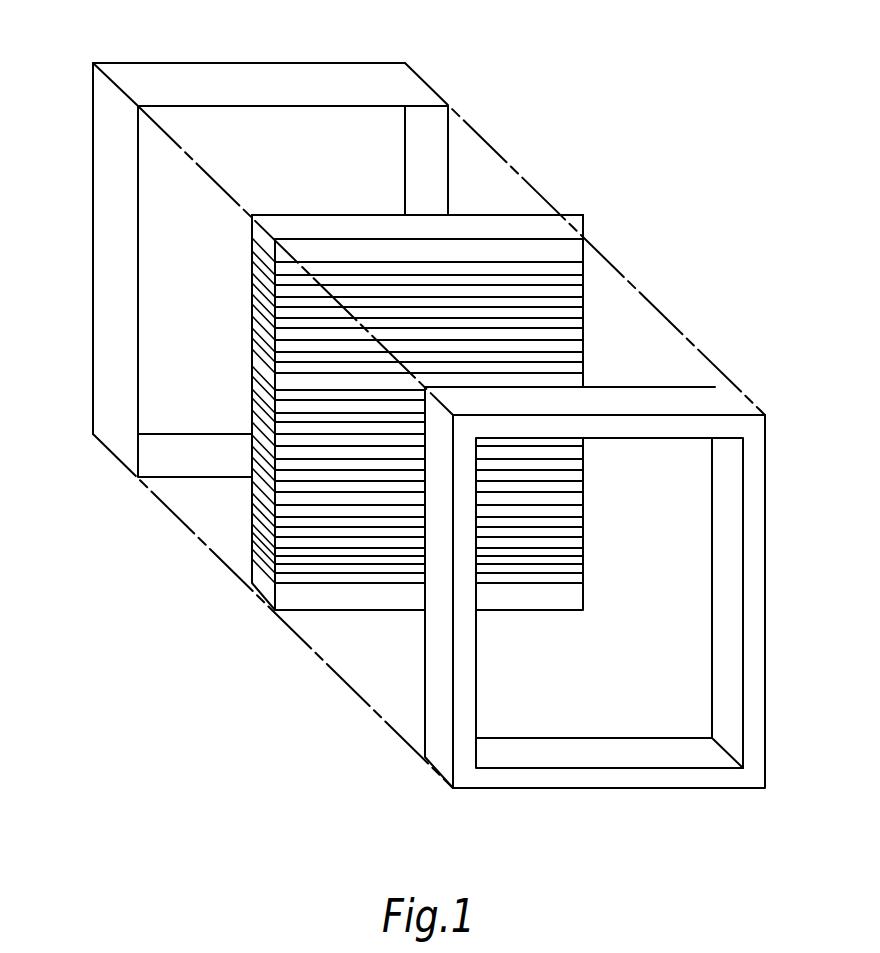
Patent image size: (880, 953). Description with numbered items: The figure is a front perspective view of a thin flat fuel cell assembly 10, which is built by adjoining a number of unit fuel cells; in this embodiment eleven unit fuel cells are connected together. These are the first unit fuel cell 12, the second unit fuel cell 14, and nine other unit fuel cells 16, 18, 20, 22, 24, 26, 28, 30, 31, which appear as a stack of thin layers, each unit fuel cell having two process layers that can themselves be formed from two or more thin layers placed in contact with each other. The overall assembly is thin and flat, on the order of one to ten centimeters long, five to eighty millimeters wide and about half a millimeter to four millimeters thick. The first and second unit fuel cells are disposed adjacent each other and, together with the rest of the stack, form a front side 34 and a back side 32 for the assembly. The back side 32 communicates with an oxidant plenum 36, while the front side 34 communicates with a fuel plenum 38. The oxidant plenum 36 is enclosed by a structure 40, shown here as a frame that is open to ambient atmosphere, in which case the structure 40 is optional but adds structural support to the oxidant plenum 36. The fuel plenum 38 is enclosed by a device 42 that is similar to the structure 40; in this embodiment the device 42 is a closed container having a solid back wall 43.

The fuel cell assembly 10 is at (233, 216).
The first unit fuel cell 12 is at (590, 485).
The second unit fuel cell 14 is at (590, 508).
The unit fuel cell 16 is at (590, 530).
The unit fuel cell 18 is at (590, 552).
The unit fuel cell 20 is at (590, 462).
The unit fuel cell 22 is at (590, 438).
The unit fuel cell 24 is at (590, 352).
The unit fuel cell 26 is at (590, 330).
The unit fuel cell 28 is at (590, 302).
The unit fuel cell 30 is at (590, 279).
The unit fuel cell 31 is at (590, 260).
The back side 32 is at (523, 252).
The front side 34 is at (358, 215).
The oxidant plenum 36 is at (493, 661).
The fuel plenum 38 is at (168, 180).
The structure 40 is at (757, 611).
The device 42 is at (252, 68).
The solid back wall 43 is at (92, 247).